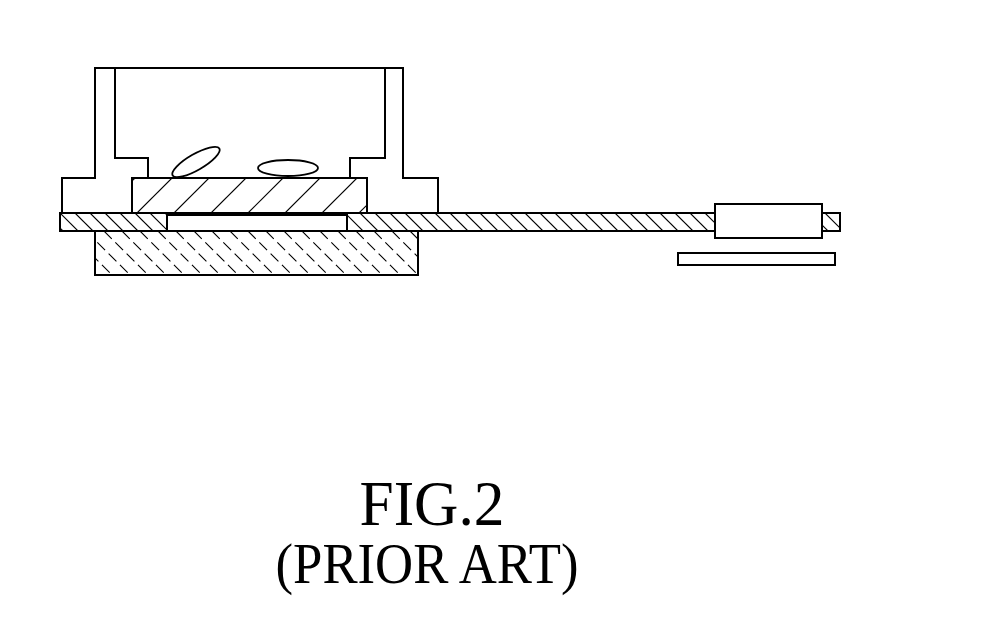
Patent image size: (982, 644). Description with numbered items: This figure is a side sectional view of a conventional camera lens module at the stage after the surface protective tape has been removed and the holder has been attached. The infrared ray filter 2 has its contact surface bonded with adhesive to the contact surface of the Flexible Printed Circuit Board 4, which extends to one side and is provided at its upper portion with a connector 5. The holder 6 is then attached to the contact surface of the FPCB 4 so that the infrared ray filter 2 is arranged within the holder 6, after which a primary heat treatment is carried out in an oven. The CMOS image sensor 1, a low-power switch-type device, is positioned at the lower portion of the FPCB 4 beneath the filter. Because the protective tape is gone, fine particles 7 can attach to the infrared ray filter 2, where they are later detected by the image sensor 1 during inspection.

The CMOS image sensor 1 is at (327, 262).
The infrared ray filter 2 is at (207, 208).
The Flexible Printed Circuit Board 4 is at (580, 218).
The connector 5 is at (765, 213).
The holder 6 is at (398, 90).
The fine particles 7 is at (199, 155).